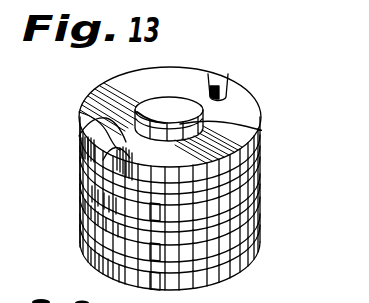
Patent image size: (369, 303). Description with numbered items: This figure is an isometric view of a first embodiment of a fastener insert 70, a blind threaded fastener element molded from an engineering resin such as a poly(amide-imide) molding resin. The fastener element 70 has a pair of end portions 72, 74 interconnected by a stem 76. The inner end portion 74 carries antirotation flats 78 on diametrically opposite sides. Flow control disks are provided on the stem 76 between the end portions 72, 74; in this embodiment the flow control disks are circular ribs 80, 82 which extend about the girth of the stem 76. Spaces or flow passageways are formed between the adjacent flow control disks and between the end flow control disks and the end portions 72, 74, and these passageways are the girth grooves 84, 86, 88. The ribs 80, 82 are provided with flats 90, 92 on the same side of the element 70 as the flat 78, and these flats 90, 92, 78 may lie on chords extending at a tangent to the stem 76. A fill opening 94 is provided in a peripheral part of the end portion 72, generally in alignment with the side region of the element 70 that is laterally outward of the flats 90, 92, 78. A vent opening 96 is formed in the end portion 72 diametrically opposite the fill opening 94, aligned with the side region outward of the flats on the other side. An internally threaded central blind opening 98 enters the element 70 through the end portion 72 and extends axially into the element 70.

The fastener insert 70 is at (262, 211).
The end portion 72 is at (228, 92).
The inner end portion 74 is at (234, 276).
The stem 76 is at (100, 256).
The antirotation flat 78 is at (120, 268).
The circular rib 80 is at (252, 186).
The circular rib 82 is at (257, 226).
The girth groove 84 is at (84, 146).
The girth groove 86 is at (82, 190).
The girth groove 88 is at (77, 229).
The flat 90 is at (78, 173).
The flat 92 is at (79, 211).
The fill opening 94 is at (79, 113).
The vent opening 96 is at (233, 90).
The central blind opening 98 is at (258, 128).